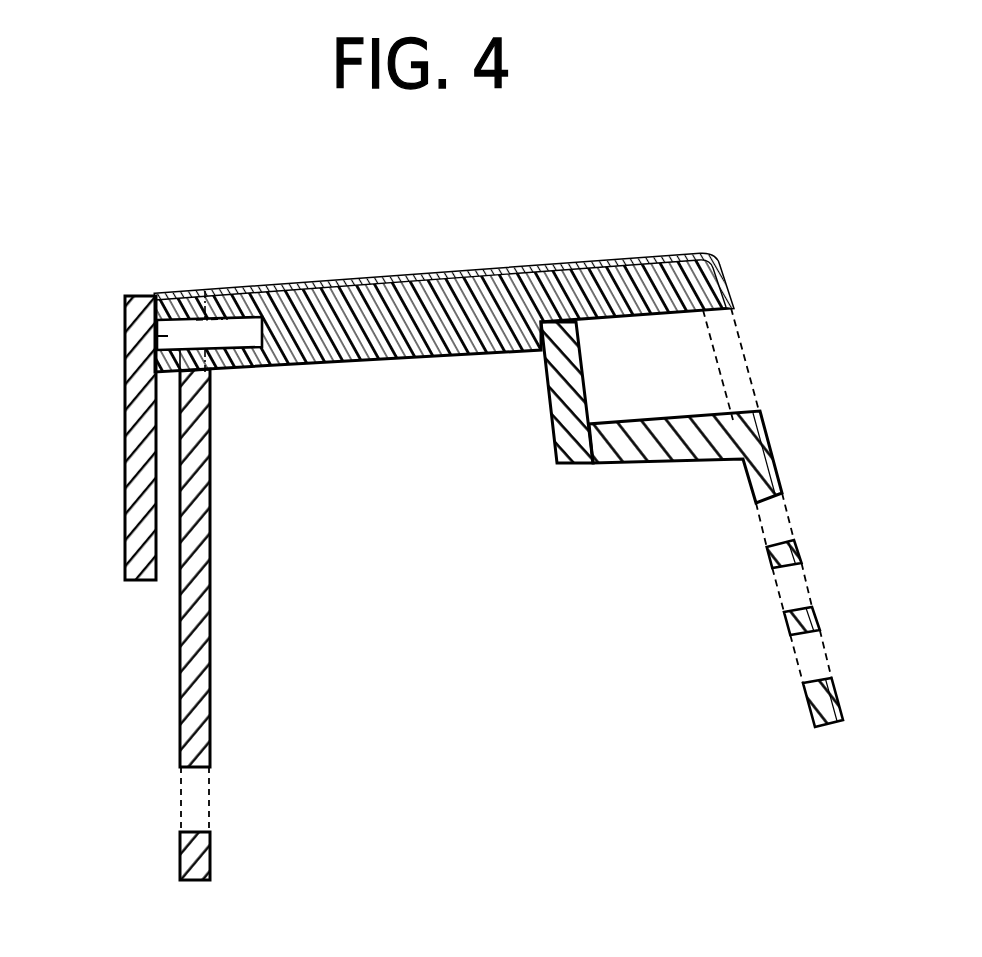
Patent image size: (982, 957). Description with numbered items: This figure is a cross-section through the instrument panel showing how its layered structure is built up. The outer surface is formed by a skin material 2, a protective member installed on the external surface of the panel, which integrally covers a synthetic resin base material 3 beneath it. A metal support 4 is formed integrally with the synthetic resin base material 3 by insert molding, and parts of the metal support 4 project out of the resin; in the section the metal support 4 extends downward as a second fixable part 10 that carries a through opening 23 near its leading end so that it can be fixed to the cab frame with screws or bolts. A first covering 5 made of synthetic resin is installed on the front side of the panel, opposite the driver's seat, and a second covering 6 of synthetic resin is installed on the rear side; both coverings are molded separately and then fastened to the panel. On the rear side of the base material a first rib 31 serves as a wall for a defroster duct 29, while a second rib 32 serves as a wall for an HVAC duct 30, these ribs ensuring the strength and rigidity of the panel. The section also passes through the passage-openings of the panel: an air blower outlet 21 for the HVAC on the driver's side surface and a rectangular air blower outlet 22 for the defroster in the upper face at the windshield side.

The skin material 2 is at (485, 270).
The synthetic resin base material 3 is at (628, 300).
The metal support 4 is at (188, 690).
The first covering 5 is at (140, 497).
The second covering 6 is at (578, 460).
The second fixable part 10 is at (182, 855).
The air blower outlet 21 is at (740, 360).
The air blower outlet 22 is at (210, 292).
The through opening 23 is at (190, 795).
The defroster duct 29 is at (163, 336).
The HVAC duct 30 is at (638, 397).
The first rib 31 is at (160, 368).
The second rib 32 is at (698, 461).